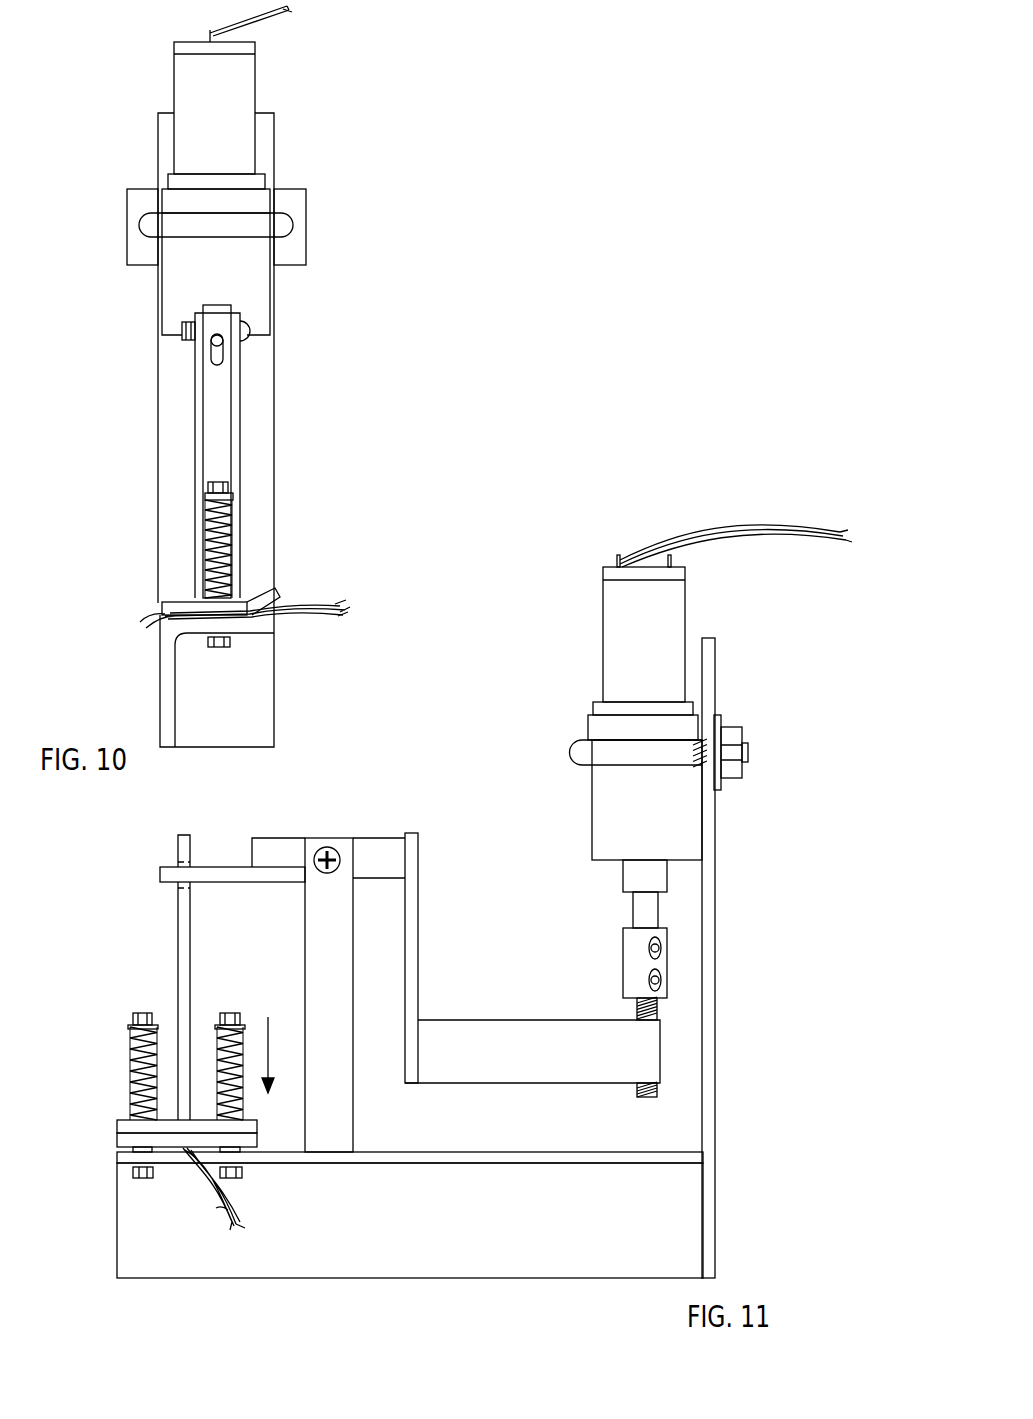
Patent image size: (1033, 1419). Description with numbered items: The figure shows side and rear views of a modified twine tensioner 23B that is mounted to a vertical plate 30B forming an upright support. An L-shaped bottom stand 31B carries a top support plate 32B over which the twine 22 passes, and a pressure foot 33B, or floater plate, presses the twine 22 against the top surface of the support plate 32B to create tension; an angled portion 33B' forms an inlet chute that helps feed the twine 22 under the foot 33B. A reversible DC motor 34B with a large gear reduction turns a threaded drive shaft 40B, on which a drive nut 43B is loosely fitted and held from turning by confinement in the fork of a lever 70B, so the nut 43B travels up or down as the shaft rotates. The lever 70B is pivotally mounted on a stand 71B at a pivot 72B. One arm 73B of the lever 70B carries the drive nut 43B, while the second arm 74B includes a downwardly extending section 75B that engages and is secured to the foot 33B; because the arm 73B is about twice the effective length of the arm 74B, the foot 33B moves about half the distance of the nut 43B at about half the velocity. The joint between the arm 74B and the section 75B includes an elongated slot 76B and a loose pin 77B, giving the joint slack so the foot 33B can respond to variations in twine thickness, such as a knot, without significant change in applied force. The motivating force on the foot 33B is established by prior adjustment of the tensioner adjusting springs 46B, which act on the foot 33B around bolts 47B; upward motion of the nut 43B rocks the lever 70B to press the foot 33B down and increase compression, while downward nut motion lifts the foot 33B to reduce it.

In FIG. 10, the twine 22 is at (335, 603).
In FIG. 11, the twine 22 is at (240, 1198).
In FIG. 10, the modified twine tensioner 23B is at (375, 246).
In FIG. 11, the modified twine tensioner 23B is at (733, 703).
In FIG. 10, the vertical plate 30B is at (167, 432).
In FIG. 11, the vertical plate 30B is at (715, 860).
In FIG. 10, the L-shaped bottom stand 31B is at (200, 725).
In FIG. 11, the L-shaped bottom stand 31B is at (160, 1280).
In FIG. 10, the top support plate 32B is at (262, 640).
In FIG. 11, the top support plate 32B is at (397, 1152).
In FIG. 10, the pressure foot 33B is at (172, 589).
In FIG. 11, the pressure foot 33B is at (161, 1103).
In FIG. 10, the angled portion 33B' is at (295, 576).
In FIG. 11, the angled portion 33B' is at (156, 1165).
In FIG. 10, the reversible DC motor 34B is at (252, 90).
In FIG. 11, the reversible DC motor 34B is at (603, 640).
In FIG. 11, the threaded drive shaft 40B is at (632, 1010).
In FIG. 11, the drive nut 43B is at (650, 1043).
In FIG. 10, the tensioner adjusting springs 46B is at (232, 550).
In FIG. 11, the tensioner adjusting springs 46B is at (130, 1053).
In FIG. 10, the guide bolt 47B is at (205, 498).
In FIG. 11, the guide bolt 47B is at (135, 1012).
In FIG. 11, the lever 70B is at (345, 936).
In FIG. 11, the stand 71B is at (355, 924).
In FIG. 10, the pivot 72B is at (250, 323).
In FIG. 11, the pivot 72B is at (327, 847).
In FIG. 11, the arm 73B is at (420, 898).
In FIG. 11, the second arm 74B is at (226, 865).
In FIG. 10, the downwardly extending section 75B is at (237, 409).
In FIG. 11, the downwardly extending section 75B is at (178, 945).
In FIG. 10, the slot 76B is at (224, 355).
In FIG. 11, the slot 76B is at (178, 888).
In FIG. 10, the loose pin 77B is at (220, 334).
In FIG. 11, the loose pin 77B is at (160, 878).